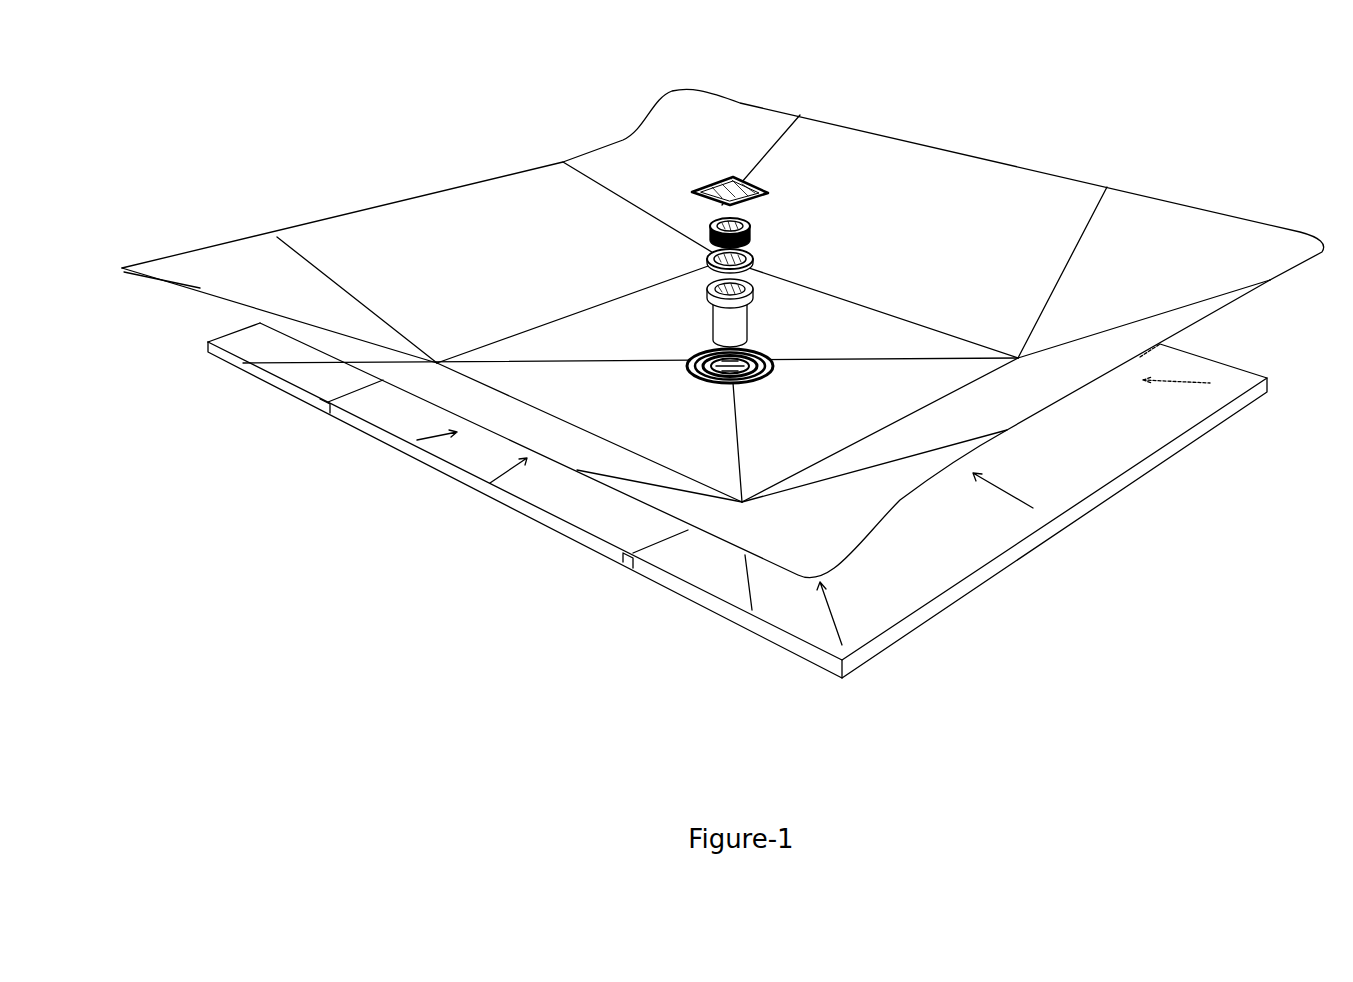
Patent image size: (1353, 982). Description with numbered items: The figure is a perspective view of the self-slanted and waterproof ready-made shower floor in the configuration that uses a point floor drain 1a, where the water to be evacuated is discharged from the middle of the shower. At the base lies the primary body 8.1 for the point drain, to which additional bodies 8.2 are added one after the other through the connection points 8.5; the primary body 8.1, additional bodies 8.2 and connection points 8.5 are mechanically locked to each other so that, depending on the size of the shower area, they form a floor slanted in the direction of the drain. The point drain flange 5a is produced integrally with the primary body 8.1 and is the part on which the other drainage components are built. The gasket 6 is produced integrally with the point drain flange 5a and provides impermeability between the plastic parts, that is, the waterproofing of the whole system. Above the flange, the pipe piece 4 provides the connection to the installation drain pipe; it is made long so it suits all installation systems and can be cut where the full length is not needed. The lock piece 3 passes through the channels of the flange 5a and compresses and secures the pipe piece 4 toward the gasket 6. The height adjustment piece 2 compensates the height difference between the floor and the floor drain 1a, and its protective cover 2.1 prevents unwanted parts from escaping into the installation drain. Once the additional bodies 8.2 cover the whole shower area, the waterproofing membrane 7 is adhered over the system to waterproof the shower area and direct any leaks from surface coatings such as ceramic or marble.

The point floor drain 1a is at (750, 178).
The height adjustment piece 2 is at (752, 232).
The protective cover 2.1 is at (712, 255).
The lock piece 3 is at (752, 262).
The pipe piece 4 is at (713, 327).
The point drain flange 5a is at (687, 366).
The gasket 6 is at (733, 383).
The waterproofing membrane 7 is at (250, 273).
The primary body for point drain 8.1 is at (470, 450).
The additional body for point drain 8.2 is at (272, 347).
The connection points 8.5 is at (328, 411).